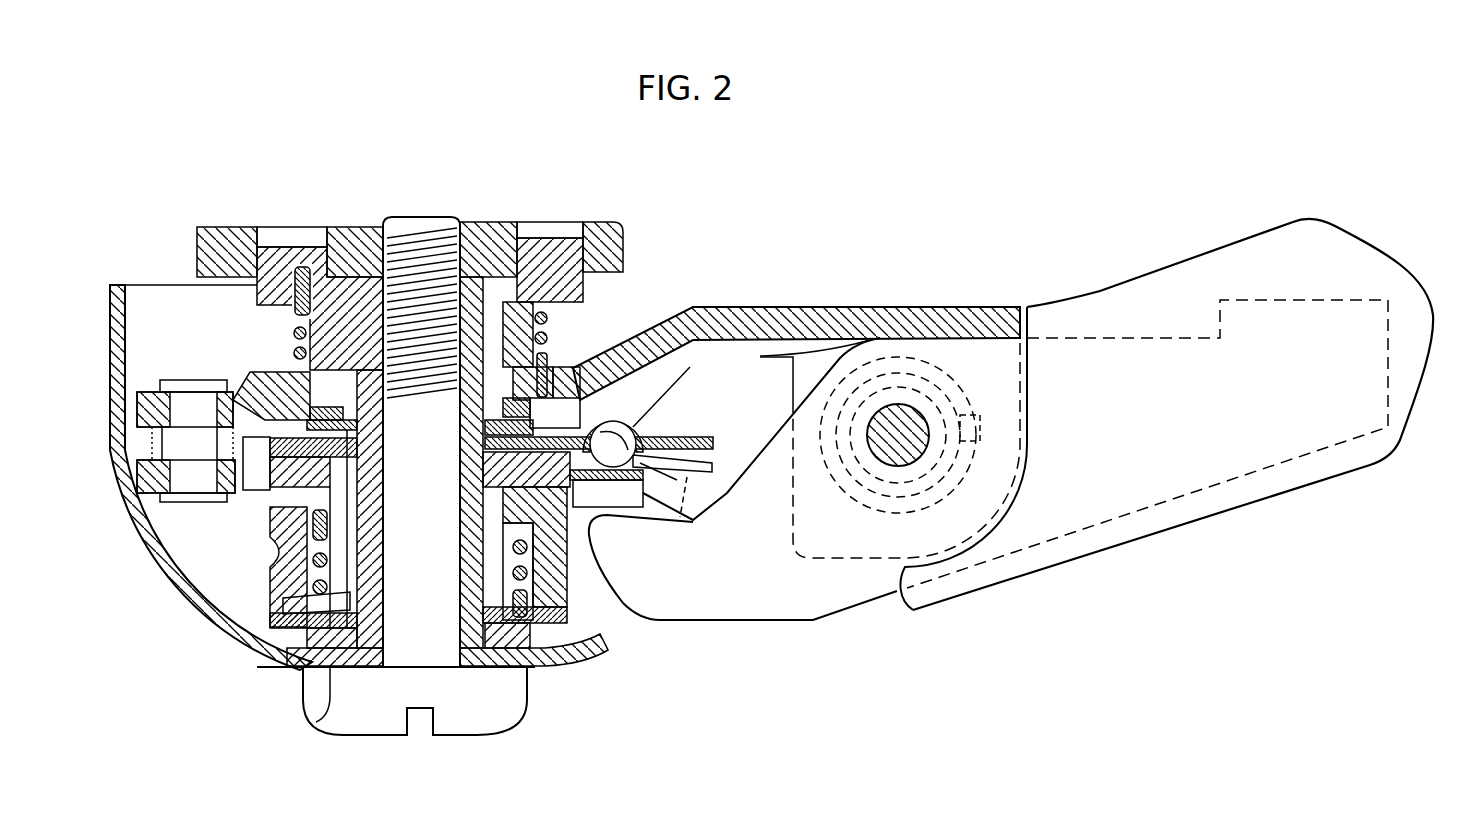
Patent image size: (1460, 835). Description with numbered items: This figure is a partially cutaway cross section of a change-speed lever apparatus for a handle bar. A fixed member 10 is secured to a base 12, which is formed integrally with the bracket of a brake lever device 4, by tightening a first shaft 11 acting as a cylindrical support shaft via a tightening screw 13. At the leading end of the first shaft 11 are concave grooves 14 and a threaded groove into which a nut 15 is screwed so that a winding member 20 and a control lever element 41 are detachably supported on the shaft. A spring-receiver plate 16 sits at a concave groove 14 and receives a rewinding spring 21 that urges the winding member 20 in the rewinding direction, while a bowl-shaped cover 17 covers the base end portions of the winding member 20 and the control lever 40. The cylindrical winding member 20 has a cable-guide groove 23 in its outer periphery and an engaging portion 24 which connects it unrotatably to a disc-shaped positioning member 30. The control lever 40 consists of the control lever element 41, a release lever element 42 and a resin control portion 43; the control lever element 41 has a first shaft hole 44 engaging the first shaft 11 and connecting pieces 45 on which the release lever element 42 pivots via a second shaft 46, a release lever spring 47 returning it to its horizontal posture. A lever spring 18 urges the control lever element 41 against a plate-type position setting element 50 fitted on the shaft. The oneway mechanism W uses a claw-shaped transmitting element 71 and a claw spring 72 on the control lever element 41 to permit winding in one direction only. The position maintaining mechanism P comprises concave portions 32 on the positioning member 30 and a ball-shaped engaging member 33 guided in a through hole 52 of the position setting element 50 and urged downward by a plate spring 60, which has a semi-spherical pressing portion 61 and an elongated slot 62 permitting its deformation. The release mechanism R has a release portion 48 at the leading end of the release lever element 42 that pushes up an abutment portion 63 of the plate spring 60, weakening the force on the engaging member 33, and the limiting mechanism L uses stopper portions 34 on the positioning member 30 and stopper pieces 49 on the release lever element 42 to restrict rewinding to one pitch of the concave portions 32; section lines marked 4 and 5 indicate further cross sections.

The fixed member 10 is at (324, 222).
The first shaft 11 is at (300, 322).
The base 12 is at (360, 224).
The tightening screw 13 is at (478, 727).
The concave grooves 14 is at (285, 632).
The nut 15 is at (324, 720).
The spring-receiver plate 16 is at (308, 650).
The bowl-shaped cover 17 is at (183, 620).
The lever spring 18 is at (548, 318).
The winding member 20 is at (273, 523).
The rewinding spring 21 is at (313, 584).
The cable-guide groove 23 is at (285, 542).
The engaging portion 24 is at (345, 498).
The positioning member 30 is at (557, 440).
The concave portions 32 is at (580, 397).
The engaging member 33 is at (615, 427).
The stopper portions 34 is at (582, 503).
The control lever 40 is at (998, 237).
The control lever element 41 is at (753, 307).
The release lever element 42 is at (808, 597).
The control portion 43 is at (1078, 295).
The first shaft hole 44 is at (372, 407).
The connecting pieces 45 is at (860, 557).
The second shaft 46 is at (901, 412).
The release lever spring 47 is at (822, 346).
The release portion 48 is at (663, 497).
The stopper pieces 49 is at (603, 525).
The position setting element 50 is at (488, 459).
The through hole 52 is at (647, 453).
The plate spring 60 is at (679, 387).
The pressing portion 61 is at (683, 348).
The slot 62 is at (503, 412).
The abutment portion 63 is at (700, 437).
The transmitting element 71 is at (257, 483).
The claw spring 72 is at (155, 442).
The brake lever device 4 is at (127, 580).
The section line 5- 5 is at (137, 386).
The position maintaining mechanism P is at (600, 410).
The oneway mechanism W is at (172, 534).
The release mechanism R is at (703, 505).
The limiting mechanism L is at (617, 530).